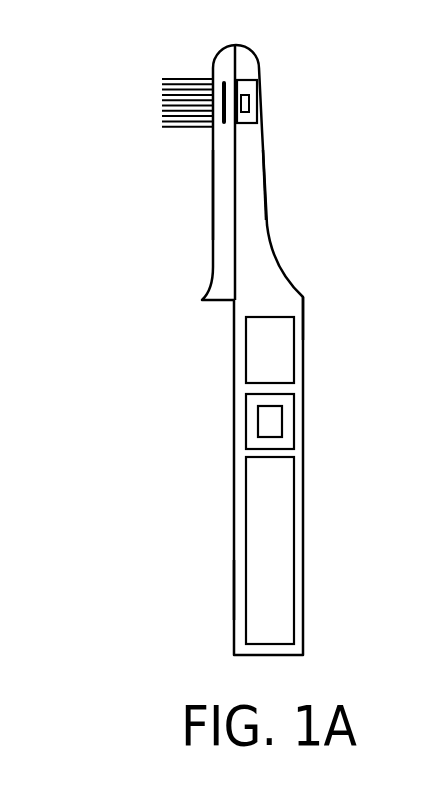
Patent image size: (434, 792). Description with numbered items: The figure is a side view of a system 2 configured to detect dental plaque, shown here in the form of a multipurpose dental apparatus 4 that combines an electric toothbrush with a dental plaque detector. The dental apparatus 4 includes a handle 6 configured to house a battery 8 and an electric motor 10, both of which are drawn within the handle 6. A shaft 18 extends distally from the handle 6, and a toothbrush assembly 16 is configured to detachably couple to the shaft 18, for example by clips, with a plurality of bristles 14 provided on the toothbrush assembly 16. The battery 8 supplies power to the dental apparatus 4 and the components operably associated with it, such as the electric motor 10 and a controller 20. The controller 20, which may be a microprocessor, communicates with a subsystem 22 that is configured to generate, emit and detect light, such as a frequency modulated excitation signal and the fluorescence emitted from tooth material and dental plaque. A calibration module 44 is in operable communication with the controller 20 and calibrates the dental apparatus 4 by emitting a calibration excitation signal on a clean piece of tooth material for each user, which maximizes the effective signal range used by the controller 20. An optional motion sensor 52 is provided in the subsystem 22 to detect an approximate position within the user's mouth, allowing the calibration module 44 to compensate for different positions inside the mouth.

The system 2 is at (112, 68).
The dental apparatus 4 is at (303, 296).
The handle 6 is at (234, 592).
The battery 8 is at (270, 565).
The electric motor 10 is at (278, 349).
The bristles 14 is at (173, 72).
The toothbrush assembly 16 is at (213, 198).
The shaft 18 is at (267, 178).
The controller 20 is at (250, 420).
The subsystem 22 is at (225, 83).
The calibration module 44 is at (265, 420).
The motion sensor 52 is at (247, 101).